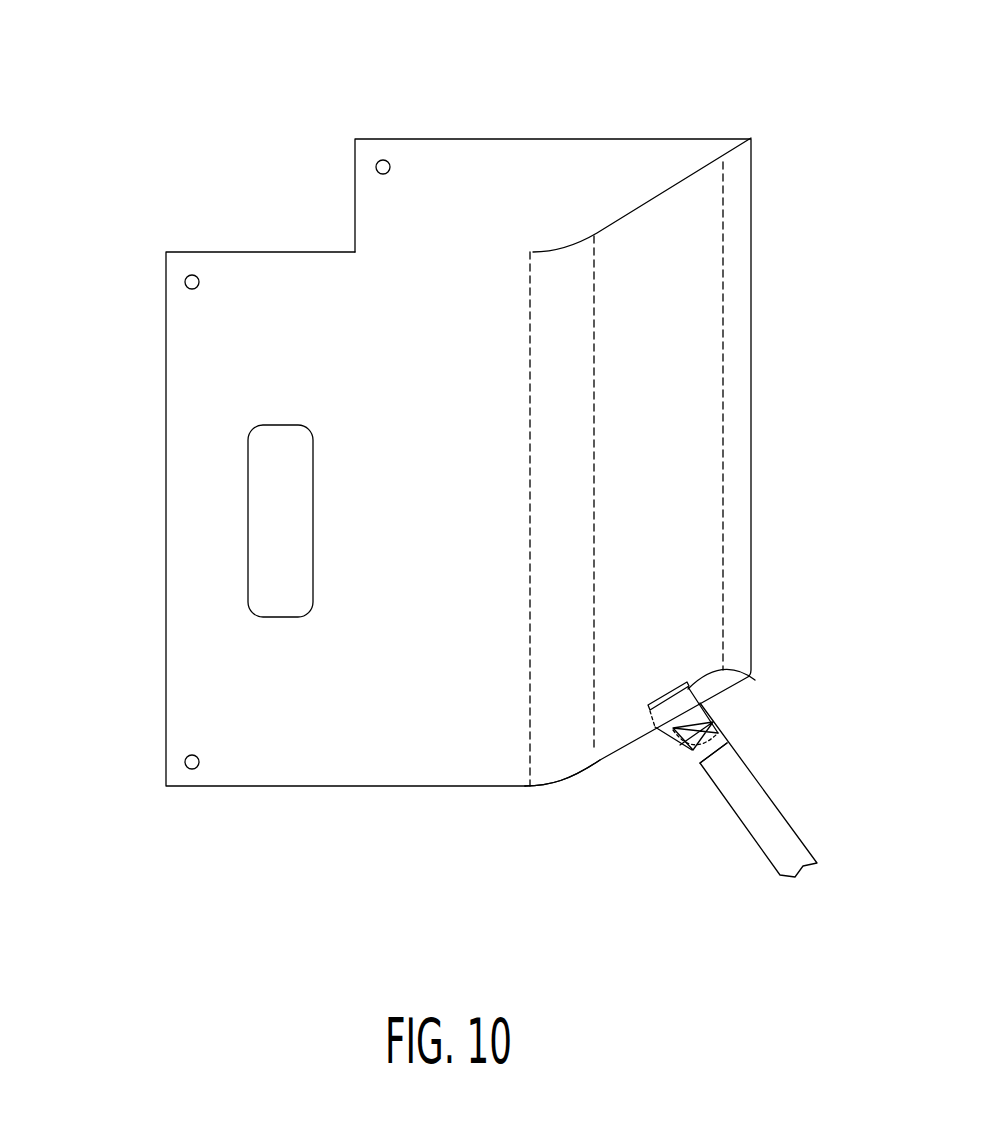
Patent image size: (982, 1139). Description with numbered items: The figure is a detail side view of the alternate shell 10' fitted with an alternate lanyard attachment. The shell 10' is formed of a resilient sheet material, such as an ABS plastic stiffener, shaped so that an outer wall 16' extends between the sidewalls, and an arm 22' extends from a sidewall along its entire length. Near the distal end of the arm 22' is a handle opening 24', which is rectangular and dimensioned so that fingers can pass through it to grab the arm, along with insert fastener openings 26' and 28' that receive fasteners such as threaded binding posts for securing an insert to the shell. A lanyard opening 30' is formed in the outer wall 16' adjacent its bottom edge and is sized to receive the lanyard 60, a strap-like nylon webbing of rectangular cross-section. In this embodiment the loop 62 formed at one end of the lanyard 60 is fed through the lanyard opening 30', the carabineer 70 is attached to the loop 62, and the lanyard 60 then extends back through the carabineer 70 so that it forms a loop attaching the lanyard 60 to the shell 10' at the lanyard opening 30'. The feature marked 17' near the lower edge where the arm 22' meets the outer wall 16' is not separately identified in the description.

The shell 10' is at (458, 401).
The outer wall 16' is at (553, 462).
The fold line 17' is at (572, 822).
The arm 22' is at (348, 519).
The handle opening 24' is at (280, 521).
The insert fastener opening 26' is at (307, 161).
The insert fastener opening 28' is at (116, 512).
The lanyard opening 30' is at (784, 703).
The lanyard 60 is at (780, 836).
The loop 62 is at (656, 728).
The carabineer 70 is at (691, 771).